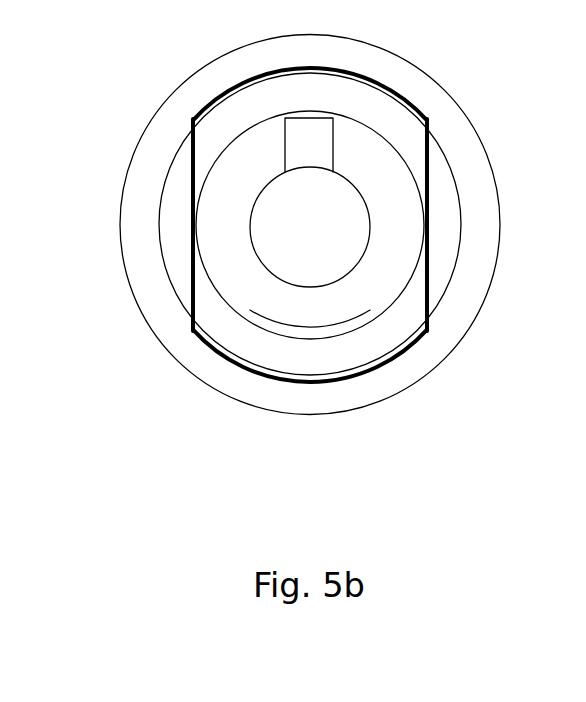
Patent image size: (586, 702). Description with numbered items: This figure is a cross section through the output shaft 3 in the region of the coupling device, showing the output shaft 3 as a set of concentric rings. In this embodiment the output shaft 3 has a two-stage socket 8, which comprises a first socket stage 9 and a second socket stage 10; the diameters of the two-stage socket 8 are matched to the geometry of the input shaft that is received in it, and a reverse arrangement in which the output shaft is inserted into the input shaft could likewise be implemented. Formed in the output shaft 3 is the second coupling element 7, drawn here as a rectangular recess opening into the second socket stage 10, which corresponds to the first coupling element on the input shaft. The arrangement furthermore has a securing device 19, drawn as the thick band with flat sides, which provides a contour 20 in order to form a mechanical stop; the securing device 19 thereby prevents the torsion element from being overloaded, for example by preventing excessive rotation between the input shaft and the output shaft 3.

The output shaft 3 is at (223, 66).
The second coupling element 7 is at (315, 142).
The two-stage socket 8 is at (343, 328).
The first socket stage 9 is at (300, 340).
The second socket stage 10 is at (397, 233).
The securing device 19 is at (190, 222).
The contour 20 is at (192, 230).